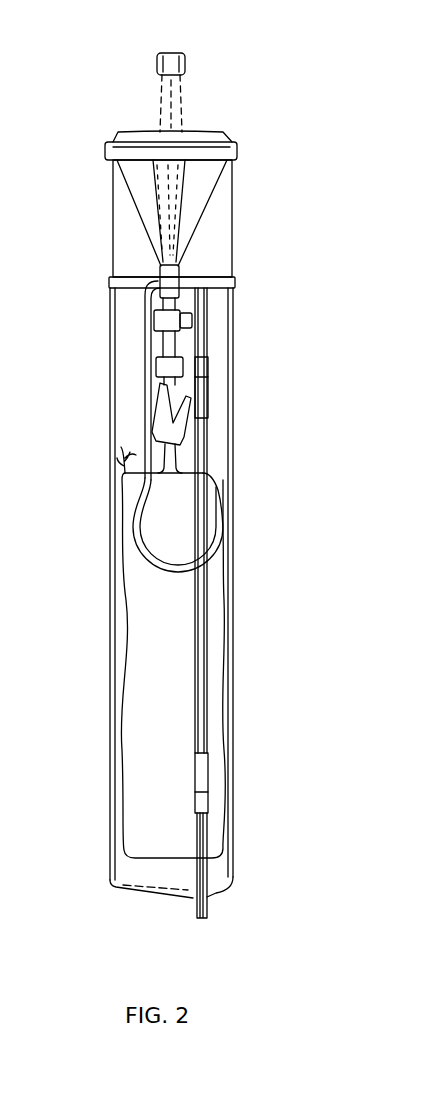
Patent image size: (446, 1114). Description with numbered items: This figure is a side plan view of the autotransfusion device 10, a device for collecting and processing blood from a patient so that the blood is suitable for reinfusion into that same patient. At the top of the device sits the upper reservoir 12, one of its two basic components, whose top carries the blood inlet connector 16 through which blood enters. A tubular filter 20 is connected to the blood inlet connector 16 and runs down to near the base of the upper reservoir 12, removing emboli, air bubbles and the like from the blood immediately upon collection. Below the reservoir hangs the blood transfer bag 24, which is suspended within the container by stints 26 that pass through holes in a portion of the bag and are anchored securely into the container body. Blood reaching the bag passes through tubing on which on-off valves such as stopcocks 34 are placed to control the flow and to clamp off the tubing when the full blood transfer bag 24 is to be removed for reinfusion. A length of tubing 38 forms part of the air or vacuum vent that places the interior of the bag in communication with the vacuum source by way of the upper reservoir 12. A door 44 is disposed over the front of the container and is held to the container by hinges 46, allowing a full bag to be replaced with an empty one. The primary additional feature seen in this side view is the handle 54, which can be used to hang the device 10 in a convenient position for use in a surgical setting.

The autotransfusion device 10 is at (292, 487).
The upper reservoir 12 is at (235, 228).
The blood inlet connector 16 is at (168, 63).
The tubular filter 20 is at (177, 195).
The blood transfer bag 24 is at (128, 638).
The stints 26 is at (125, 446).
The stopcocks 34 is at (193, 320).
The tubing 38 is at (221, 400).
The door 44 is at (233, 850).
The hinges 46 is at (260, 550).
The handle 54 is at (133, 540).